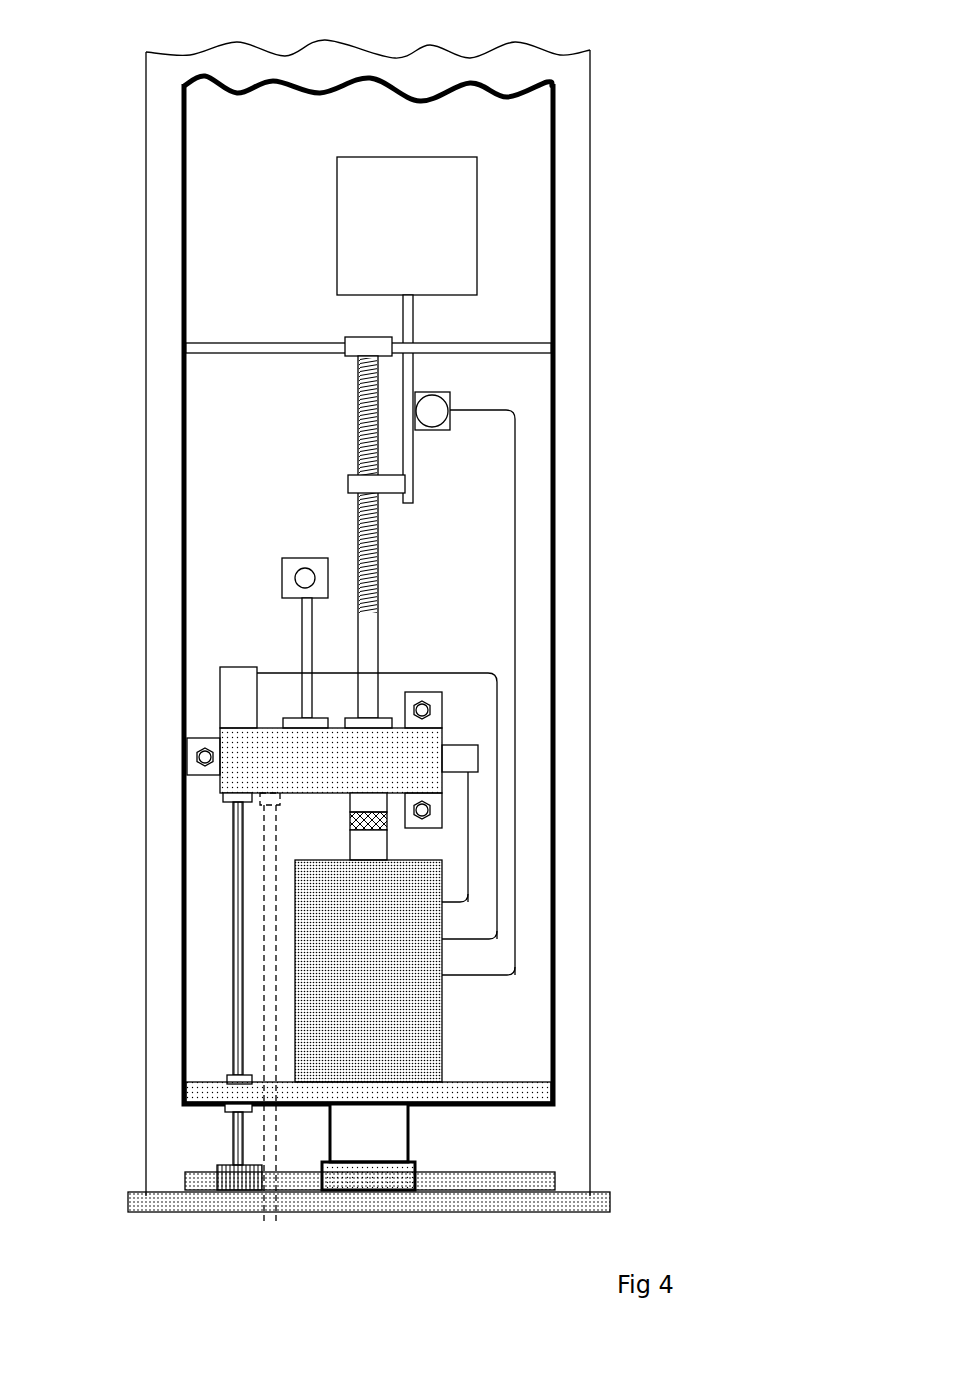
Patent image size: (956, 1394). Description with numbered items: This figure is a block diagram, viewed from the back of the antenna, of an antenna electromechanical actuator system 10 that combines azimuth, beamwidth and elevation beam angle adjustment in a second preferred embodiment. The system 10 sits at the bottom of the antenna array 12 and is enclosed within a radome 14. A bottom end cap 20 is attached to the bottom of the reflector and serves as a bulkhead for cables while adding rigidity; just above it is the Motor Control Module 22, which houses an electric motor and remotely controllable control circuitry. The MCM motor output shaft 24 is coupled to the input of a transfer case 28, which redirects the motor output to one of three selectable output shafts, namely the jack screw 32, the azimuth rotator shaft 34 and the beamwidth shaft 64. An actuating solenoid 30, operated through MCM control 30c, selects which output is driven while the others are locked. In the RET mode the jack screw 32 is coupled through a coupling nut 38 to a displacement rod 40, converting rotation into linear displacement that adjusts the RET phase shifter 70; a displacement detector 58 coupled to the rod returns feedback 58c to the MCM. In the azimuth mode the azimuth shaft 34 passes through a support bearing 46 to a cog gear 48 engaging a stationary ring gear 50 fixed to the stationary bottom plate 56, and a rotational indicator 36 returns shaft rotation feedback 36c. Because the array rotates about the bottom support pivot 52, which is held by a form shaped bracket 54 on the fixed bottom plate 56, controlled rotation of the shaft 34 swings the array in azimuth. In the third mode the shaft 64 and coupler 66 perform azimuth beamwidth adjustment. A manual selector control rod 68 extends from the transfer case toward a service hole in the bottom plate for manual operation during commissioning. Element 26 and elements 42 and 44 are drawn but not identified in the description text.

The antenna electromechanical actuator system 10 is at (648, 360).
The antenna array 12 is at (558, 583).
The radome 14 is at (145, 484).
The bottom end cap 20 is at (507, 1095).
The Motor Control Module 22 is at (393, 1030).
The MCM motor output shaft 24 is at (345, 838).
The coupling 26 is at (345, 802).
The transfer case 28 is at (328, 773).
The actuating solenoid 30 is at (462, 745).
The MCM control 30c is at (434, 902).
The jack screw 32 is at (372, 652).
The azimuth rotator shaft 34 is at (237, 877).
The rotational indicator 36 is at (230, 663).
The azimuth shaft rotation feedback 36c is at (448, 939).
The coupling nut 38 is at (345, 485).
The displacement rod 40 is at (408, 493).
The bearing block 42 is at (348, 357).
The shelf 44 is at (267, 357).
The support bearing 46 is at (225, 1070).
The cog gear 48 is at (222, 1165).
The stationary ring gear 50 is at (537, 1172).
The bottom support pivot 52 is at (373, 1175).
The form shaped bracket 54 is at (386, 1148).
The stationary bottom plate 56 is at (467, 1200).
The displacement detector 58 is at (452, 397).
The displacement feedback 58c is at (457, 975).
The azimuth beamwidth adjustment shaft 64 is at (305, 630).
The coupler 66 is at (300, 553).
The manual selector control rod 68 is at (272, 1222).
The RET phase shifter 70 is at (483, 253).